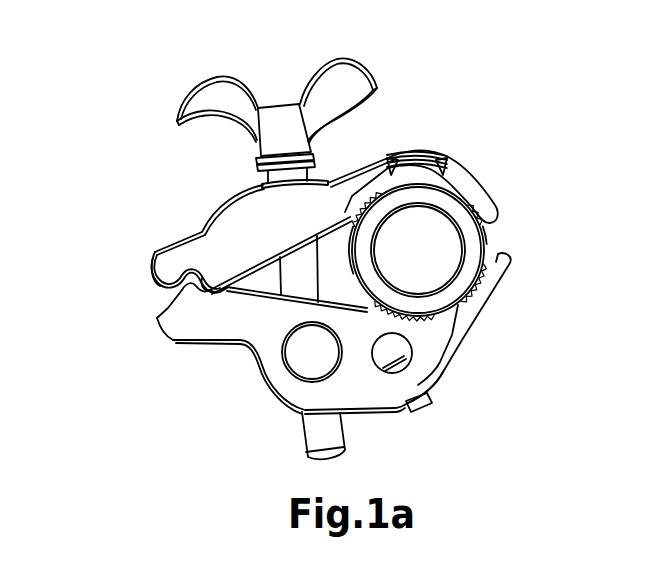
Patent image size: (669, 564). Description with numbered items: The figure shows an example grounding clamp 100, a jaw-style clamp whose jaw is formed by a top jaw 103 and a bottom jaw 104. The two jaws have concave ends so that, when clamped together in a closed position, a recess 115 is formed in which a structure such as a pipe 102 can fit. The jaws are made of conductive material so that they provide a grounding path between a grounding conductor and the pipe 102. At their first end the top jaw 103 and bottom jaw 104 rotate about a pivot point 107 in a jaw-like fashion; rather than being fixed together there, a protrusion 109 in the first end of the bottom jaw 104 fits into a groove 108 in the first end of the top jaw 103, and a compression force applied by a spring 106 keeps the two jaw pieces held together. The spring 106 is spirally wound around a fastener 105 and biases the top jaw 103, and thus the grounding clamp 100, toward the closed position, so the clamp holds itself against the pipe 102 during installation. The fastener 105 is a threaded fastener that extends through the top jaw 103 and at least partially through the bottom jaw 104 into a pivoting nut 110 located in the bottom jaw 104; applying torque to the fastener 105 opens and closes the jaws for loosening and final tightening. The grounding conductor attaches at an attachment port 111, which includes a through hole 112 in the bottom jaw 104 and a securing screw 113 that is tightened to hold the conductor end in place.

The grounding clamp 100 is at (428, 93).
The pipe 102 is at (480, 243).
The top jaw 103 is at (449, 140).
The bottom jaw 104 is at (525, 286).
The fastener 105 is at (192, 83).
The spring 106 is at (263, 178).
The pivot point 107 is at (155, 272).
The groove 108 is at (190, 276).
The protrusion 109 is at (185, 294).
The pivoting nut 110 is at (288, 372).
The attachment port 111 is at (425, 361).
The through hole 112 is at (395, 351).
The securing screw 113 is at (423, 416).
The recess 115 is at (465, 208).